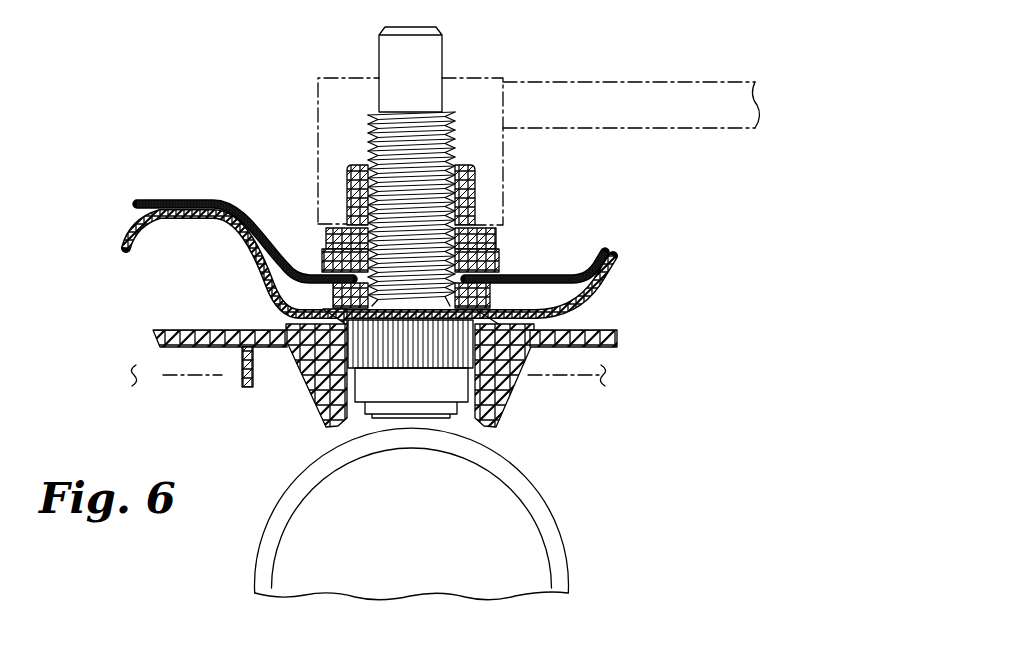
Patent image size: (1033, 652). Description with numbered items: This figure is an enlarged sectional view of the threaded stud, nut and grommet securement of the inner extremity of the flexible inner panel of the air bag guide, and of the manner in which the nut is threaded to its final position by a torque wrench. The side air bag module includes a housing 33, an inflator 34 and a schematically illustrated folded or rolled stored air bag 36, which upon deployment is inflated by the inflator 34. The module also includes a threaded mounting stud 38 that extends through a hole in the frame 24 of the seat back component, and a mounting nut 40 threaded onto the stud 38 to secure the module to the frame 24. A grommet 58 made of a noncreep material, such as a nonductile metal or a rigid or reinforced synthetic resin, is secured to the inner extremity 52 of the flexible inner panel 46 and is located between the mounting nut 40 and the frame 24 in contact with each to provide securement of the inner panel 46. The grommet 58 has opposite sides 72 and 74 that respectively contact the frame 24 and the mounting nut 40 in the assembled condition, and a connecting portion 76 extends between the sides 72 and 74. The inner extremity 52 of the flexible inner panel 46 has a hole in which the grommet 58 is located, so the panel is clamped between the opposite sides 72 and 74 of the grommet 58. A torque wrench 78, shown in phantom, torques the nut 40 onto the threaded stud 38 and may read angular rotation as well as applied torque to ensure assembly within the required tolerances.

The frame 24 is at (249, 272).
The housing 33 is at (603, 330).
The inflator 34 is at (545, 518).
The stored air bag 36 is at (152, 374).
The threaded mounting stud 38 is at (430, 133).
The mounting nut 40 is at (347, 190).
The flexible inner panel 46 is at (175, 201).
The inner extremity 52 is at (518, 272).
The grommet 58 is at (500, 248).
The grommet side 72 is at (300, 350).
The grommet side 74 is at (322, 260).
The connecting portion 76 is at (372, 276).
The torque wrench 78 is at (505, 80).